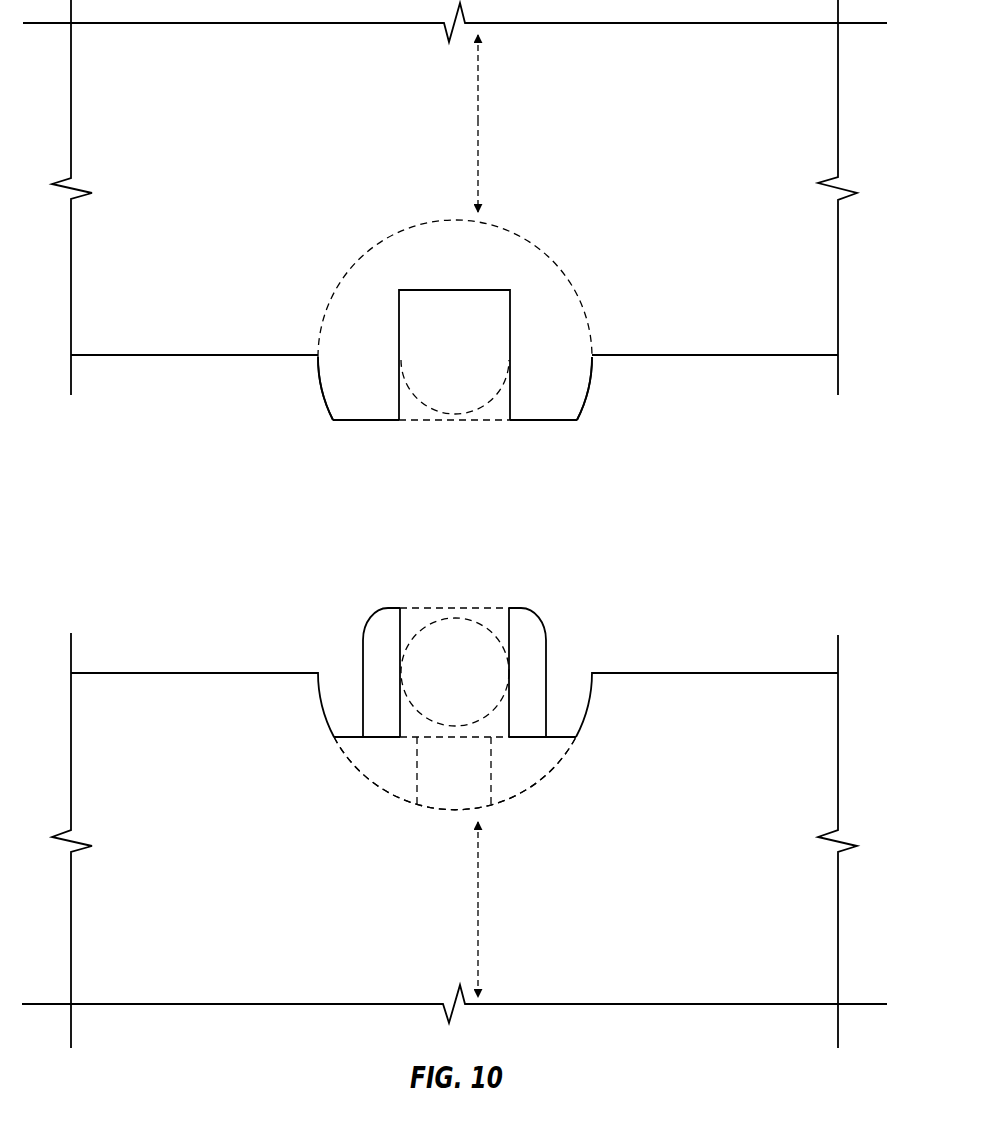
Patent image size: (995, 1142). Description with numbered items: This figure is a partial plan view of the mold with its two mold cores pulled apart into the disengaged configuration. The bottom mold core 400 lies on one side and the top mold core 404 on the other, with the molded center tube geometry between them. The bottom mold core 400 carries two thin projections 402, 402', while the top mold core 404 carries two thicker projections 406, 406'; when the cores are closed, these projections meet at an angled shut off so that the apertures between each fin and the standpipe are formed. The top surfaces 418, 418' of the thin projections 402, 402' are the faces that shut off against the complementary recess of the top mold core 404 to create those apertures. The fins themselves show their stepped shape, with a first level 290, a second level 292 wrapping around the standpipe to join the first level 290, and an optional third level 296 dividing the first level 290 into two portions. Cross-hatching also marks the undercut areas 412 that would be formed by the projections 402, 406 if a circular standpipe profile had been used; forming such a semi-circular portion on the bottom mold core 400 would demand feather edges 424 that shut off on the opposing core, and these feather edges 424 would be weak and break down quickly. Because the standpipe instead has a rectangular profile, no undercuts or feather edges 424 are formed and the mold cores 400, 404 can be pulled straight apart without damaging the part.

The first level 290 is at (378, 757).
The second level 292 is at (353, 350).
The third level 296 is at (450, 780).
The bottom mold core 400 is at (745, 931).
The thin projections 402 is at (349, 668).
The spacer 402' is at (573, 666).
The top mold core 404 is at (743, 279).
The thicker projections 406 is at (307, 388).
The trench sidewall 406' is at (619, 388).
The undercut areas 412 is at (454, 580).
The top surface 418 is at (343, 672).
The liner 418' is at (573, 672).
The feather edges 424 is at (398, 672).